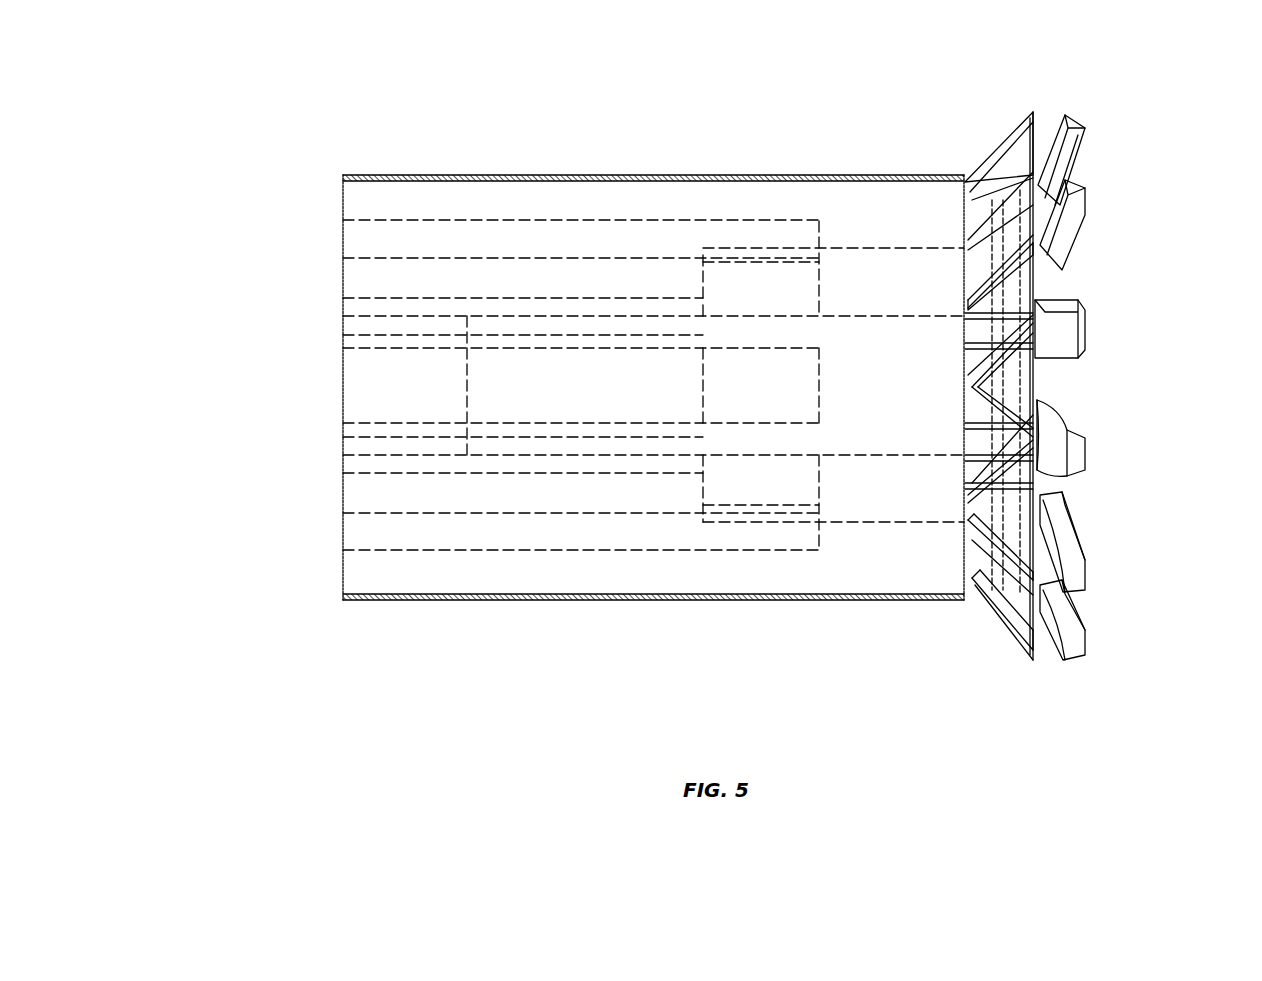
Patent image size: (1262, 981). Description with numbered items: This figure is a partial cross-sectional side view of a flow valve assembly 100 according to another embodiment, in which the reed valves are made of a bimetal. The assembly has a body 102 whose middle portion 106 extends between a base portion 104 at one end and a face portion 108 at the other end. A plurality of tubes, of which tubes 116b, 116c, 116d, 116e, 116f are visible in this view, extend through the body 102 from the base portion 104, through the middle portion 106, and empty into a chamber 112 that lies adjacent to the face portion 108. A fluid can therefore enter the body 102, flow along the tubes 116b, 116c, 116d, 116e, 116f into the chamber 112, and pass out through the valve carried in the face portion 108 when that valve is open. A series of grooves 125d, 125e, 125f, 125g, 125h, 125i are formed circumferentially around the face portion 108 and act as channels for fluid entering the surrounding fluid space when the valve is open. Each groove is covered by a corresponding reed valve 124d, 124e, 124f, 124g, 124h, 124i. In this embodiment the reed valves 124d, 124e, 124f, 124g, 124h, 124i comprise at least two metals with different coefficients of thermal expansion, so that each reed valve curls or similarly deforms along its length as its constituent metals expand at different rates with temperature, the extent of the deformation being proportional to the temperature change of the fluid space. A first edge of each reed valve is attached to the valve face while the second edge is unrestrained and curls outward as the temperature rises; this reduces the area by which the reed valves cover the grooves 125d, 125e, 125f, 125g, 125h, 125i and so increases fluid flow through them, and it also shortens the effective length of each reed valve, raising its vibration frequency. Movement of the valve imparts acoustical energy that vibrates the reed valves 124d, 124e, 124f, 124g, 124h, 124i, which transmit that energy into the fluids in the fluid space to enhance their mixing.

The flow valve assembly 100 is at (268, 150).
The body 102 is at (968, 150).
The base portion 104 is at (343, 600).
The middle portion 106 is at (660, 600).
The face portion 108 is at (965, 600).
The chamber 112 is at (860, 377).
The tube 116b is at (343, 236).
The tube 116c is at (343, 300).
The tube 116d is at (343, 388).
The tube 116e is at (343, 512).
The tube 116f is at (343, 577).
The reed valve 124d is at (1080, 652).
The reed valve 124e is at (1085, 565).
The reed valve 124f is at (1085, 455).
The reed valve 124g is at (1085, 315).
The reed valve 124h is at (1085, 215).
The reed valve 124i is at (1080, 148).
The groove 125d is at (1000, 640).
The groove 125e is at (1045, 600).
The groove 125f is at (1040, 485).
The groove 125g is at (1040, 362).
The groove 125h is at (1040, 243).
The groove 125i is at (1012, 118).